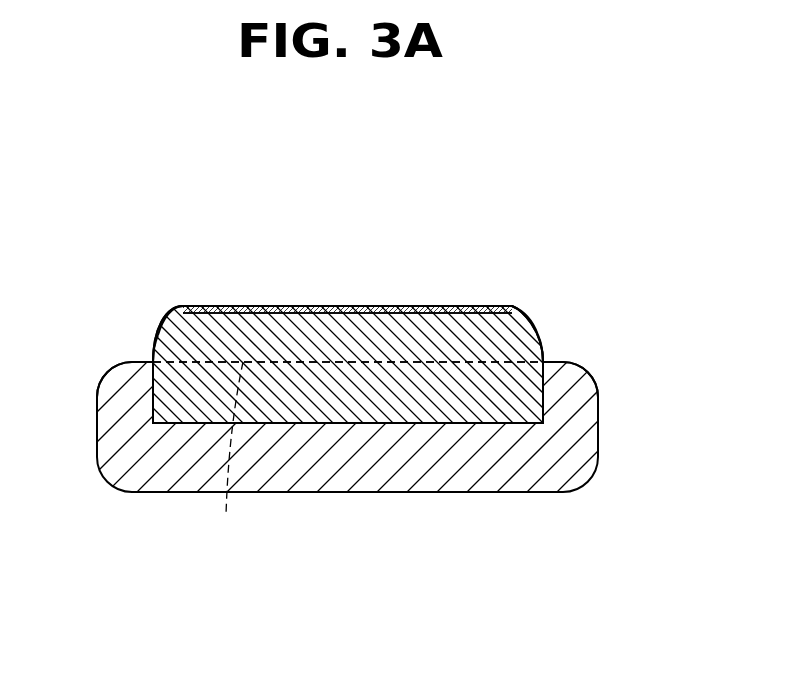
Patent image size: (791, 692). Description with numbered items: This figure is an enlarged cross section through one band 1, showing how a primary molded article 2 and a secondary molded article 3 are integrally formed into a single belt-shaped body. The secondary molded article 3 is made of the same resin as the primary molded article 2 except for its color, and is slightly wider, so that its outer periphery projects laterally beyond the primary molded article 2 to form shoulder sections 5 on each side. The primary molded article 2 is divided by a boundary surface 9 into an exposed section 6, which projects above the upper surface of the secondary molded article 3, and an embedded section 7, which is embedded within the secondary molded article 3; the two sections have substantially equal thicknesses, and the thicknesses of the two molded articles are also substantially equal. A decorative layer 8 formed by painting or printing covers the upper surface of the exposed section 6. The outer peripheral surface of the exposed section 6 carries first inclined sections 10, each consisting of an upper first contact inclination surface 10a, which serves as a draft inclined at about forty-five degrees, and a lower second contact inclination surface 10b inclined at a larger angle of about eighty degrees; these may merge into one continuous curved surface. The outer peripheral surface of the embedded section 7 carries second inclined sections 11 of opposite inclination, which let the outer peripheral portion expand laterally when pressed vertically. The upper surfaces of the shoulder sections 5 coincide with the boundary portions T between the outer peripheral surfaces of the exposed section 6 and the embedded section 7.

The band 1 is at (204, 270).
The primary molded article 2 is at (247, 298).
The secondary molded article 3 is at (337, 498).
The shoulder sections 5 is at (133, 372).
The exposed section 6 is at (372, 340).
The embedded section 7 is at (440, 390).
The decorative layer 8 is at (318, 307).
The boundary surface 9 is at (228, 456).
The first inclined sections 10 is at (177, 222).
The first contact inclination surface 10a is at (174, 315).
The second contact inclination surface 10b is at (150, 360).
The second inclined sections 11 is at (150, 398).
The boundary portions T is at (148, 361).